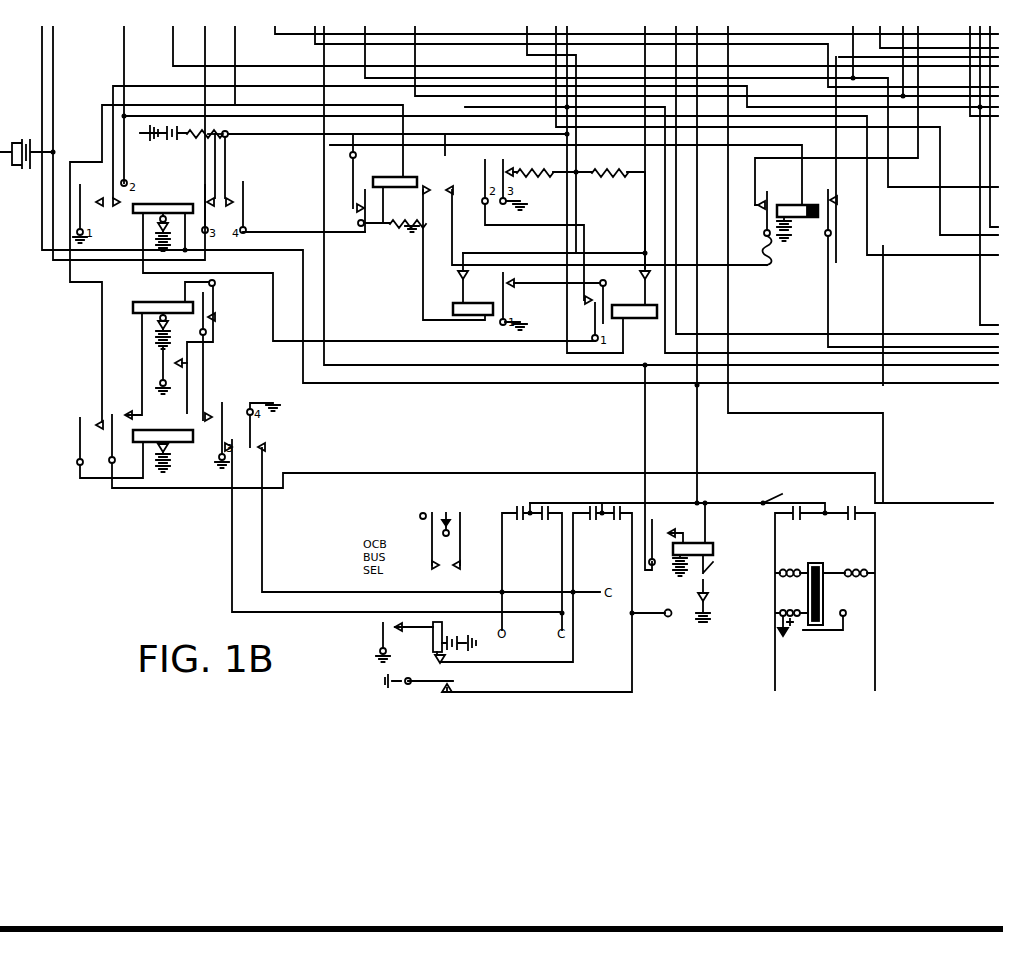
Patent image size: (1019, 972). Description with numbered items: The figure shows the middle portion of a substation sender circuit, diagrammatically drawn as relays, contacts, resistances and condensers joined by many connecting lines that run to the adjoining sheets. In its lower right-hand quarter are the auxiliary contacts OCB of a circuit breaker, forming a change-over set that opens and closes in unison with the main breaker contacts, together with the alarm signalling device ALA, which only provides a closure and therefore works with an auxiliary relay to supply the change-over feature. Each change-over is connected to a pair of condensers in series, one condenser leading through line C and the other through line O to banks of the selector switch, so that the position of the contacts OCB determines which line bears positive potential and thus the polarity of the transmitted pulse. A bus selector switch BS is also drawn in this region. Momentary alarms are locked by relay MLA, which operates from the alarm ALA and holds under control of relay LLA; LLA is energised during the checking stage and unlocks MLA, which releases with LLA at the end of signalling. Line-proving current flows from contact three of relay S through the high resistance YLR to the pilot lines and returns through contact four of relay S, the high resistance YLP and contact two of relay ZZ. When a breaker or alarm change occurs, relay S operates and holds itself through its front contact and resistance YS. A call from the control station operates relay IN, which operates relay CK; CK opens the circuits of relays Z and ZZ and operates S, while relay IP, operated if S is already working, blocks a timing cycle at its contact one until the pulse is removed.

The resistance YS is at (184, 129).
The relay CK is at (163, 218).
The relay S is at (388, 169).
The high resistance YLR is at (575, 211).
The relay IP is at (473, 284).
The relay IN is at (634, 190).
The relay ZZ is at (876, 267).
The high resistance YLP is at (783, 254).
The relay LLA is at (420, 450).
The alarm signalling device ALA is at (311, 504).
The relay MLA is at (135, 444).
The BS bus selector switch BS is at (443, 533).
The auxiliary contacts OCB is at (830, 600).